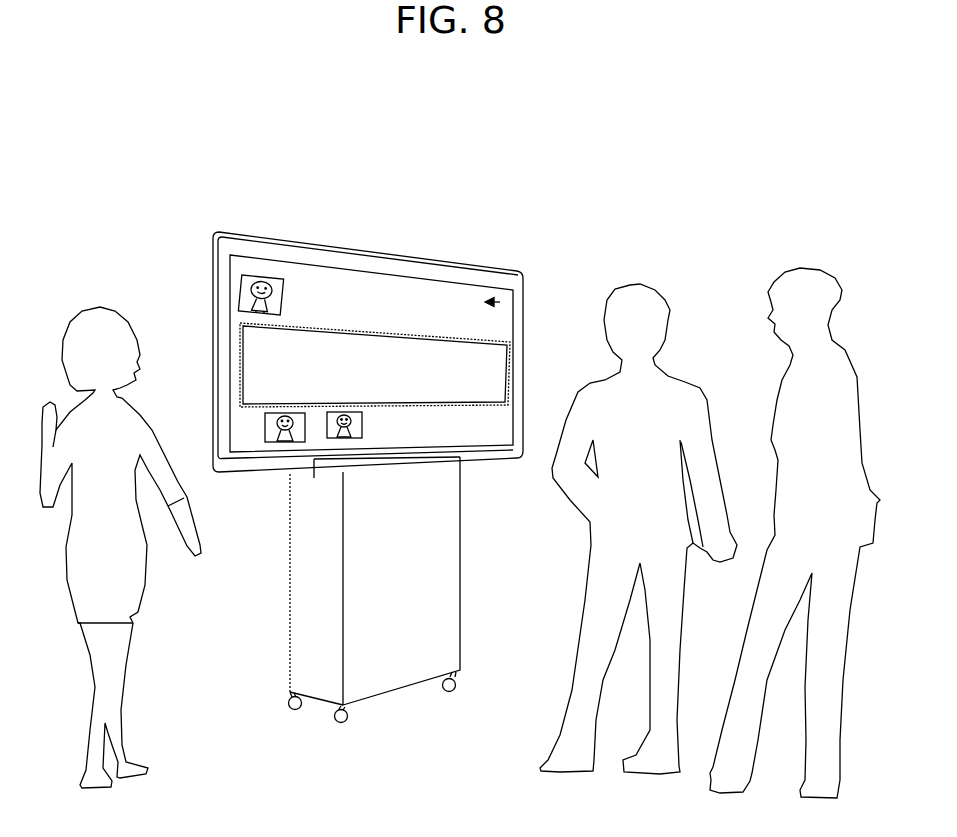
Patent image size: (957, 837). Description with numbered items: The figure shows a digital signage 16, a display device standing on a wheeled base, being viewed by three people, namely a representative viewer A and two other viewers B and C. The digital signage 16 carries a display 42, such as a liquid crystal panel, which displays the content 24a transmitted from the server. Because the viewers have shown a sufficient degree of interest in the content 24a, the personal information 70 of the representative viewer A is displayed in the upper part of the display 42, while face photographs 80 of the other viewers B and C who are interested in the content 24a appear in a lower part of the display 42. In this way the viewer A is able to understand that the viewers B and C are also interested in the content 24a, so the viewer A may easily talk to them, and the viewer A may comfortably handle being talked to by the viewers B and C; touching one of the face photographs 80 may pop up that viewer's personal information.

The digital signage 16 is at (389, 236).
The display 42 is at (457, 283).
The personal information 70 is at (490, 302).
The content 24a is at (404, 383).
The face photographs 80 is at (251, 433).
The viewer A is at (98, 286).
The viewer B is at (635, 270).
The viewer C is at (802, 251).